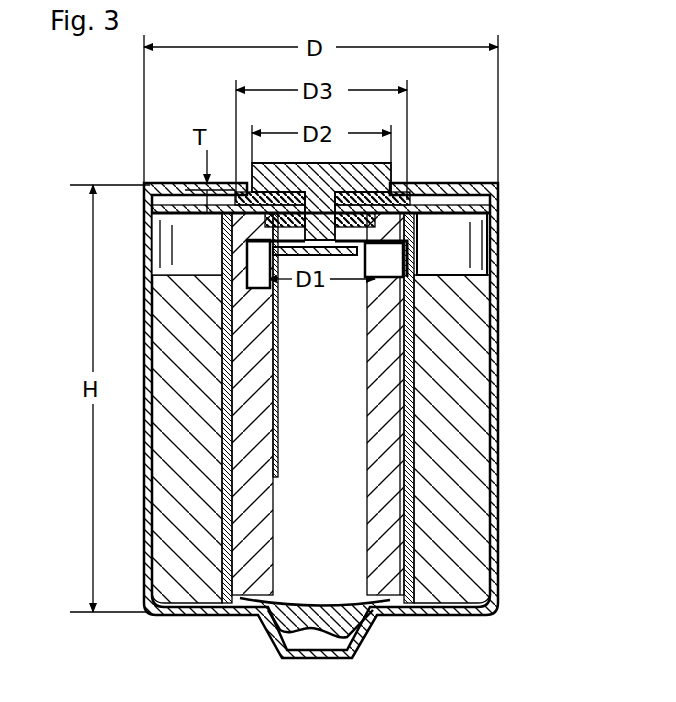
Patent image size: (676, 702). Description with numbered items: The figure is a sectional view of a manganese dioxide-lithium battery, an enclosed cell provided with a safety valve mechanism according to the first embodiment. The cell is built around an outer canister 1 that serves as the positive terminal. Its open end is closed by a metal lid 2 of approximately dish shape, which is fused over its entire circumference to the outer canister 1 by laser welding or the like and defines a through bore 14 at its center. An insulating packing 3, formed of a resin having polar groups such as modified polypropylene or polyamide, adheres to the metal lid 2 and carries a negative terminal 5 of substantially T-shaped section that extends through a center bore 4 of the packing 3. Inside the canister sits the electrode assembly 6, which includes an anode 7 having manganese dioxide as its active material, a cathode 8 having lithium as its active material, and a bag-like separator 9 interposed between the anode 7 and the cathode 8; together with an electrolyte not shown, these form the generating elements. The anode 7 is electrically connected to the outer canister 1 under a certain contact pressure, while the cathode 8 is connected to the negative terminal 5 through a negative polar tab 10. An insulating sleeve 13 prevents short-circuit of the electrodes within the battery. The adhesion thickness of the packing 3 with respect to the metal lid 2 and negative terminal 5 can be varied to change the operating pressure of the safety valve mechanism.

The outer canister 1 is at (502, 243).
The metal lid 2 is at (459, 198).
The insulating packing 3 is at (403, 170).
The center bore 4 is at (318, 207).
The negative terminal 5 is at (268, 164).
The electrode assembly 6 is at (350, 408).
The anode 7 is at (410, 371).
The cathode 8 is at (364, 405).
The bag-like separator 9 is at (401, 432).
The negative polar tab 10 is at (276, 321).
The insulating sleeve 13 is at (390, 257).
The through bore 14 is at (352, 256).